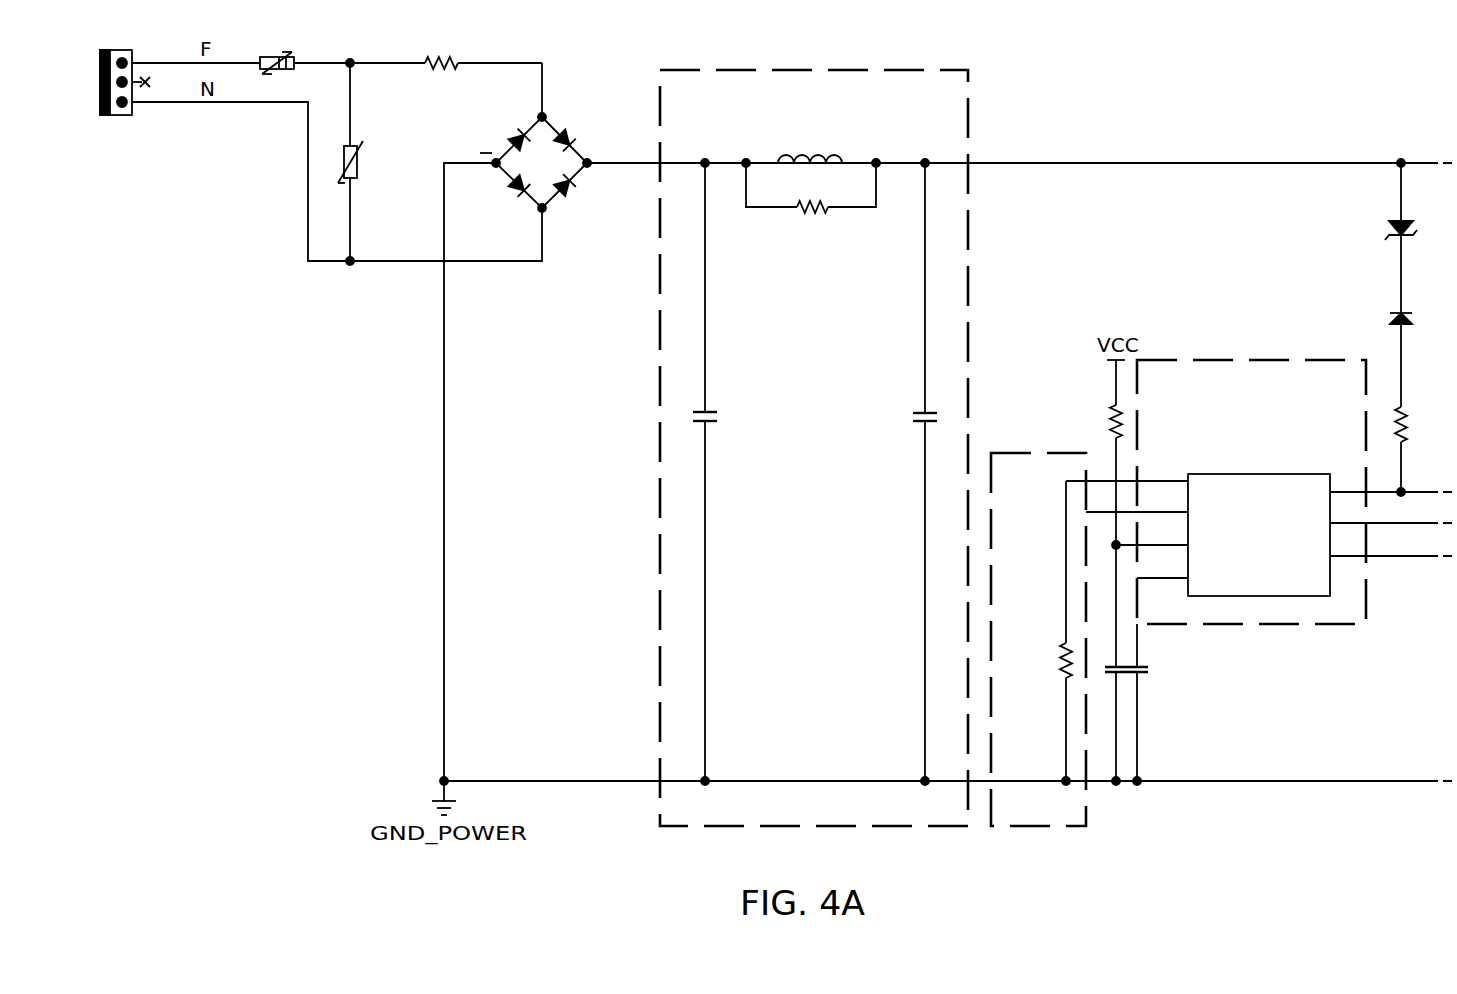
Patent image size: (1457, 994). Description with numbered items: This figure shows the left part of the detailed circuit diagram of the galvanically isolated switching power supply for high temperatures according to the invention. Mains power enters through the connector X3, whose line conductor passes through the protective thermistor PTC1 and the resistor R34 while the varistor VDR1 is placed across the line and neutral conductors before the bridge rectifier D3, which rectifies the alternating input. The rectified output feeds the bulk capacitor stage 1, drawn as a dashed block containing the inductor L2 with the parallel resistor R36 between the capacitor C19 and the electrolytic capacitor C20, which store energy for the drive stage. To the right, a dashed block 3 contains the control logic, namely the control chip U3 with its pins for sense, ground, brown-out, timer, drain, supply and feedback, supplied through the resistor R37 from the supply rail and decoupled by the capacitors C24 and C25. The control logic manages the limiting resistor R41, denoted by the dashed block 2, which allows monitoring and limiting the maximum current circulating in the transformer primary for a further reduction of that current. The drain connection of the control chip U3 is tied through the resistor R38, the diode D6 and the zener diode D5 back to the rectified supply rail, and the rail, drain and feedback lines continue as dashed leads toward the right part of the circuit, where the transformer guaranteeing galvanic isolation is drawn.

The bulk capacitor 1 is at (814, 448).
The limiting resistor 2 is at (1038, 639).
The control chip module 3 is at (1251, 492).
The power input connector X3 is at (132, 74).
The PTC thermistor fuse PTC1 is at (275, 50).
The resistor R34 is at (438, 51).
The varistor VDR1 is at (354, 162).
The bridge rectifier D3 is at (536, 167).
The inductor L2 is at (810, 147).
The resistor R36 is at (811, 188).
The capacitor C19 is at (720, 472).
The electrolytic capacitor C20 is at (918, 472).
The resistor R37 is at (1105, 452).
The limiting resistor R41 is at (1055, 631).
The capacitor C24 is at (1120, 663).
The capacitor C25 is at (1151, 702).
The control chip U3 is at (1259, 519).
The zener diode D5 is at (1405, 238).
The diode D6 is at (1405, 353).
The resistor R38 is at (1390, 449).